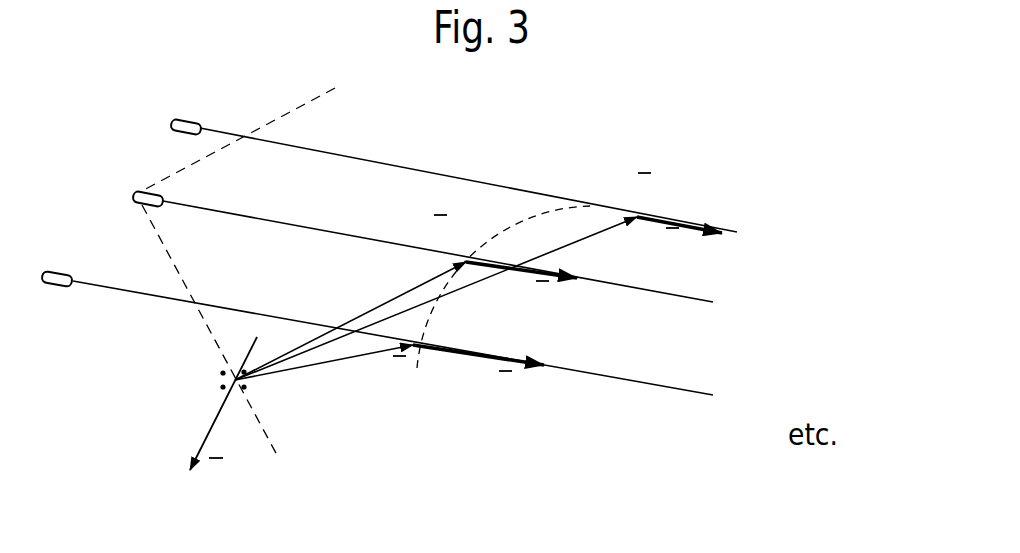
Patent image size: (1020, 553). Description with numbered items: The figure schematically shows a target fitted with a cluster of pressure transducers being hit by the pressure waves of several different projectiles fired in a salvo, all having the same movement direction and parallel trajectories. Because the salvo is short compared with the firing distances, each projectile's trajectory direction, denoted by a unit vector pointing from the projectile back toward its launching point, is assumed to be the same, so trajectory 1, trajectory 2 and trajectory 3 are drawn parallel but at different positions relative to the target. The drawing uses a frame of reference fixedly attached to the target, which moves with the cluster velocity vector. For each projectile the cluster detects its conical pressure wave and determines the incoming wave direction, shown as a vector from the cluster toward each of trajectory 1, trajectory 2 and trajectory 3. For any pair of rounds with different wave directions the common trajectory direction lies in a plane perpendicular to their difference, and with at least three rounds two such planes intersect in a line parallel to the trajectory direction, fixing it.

The trajectory 1 is at (535, 191).
The trajectory 2 is at (745, 289).
The trajectory 3 is at (733, 395).